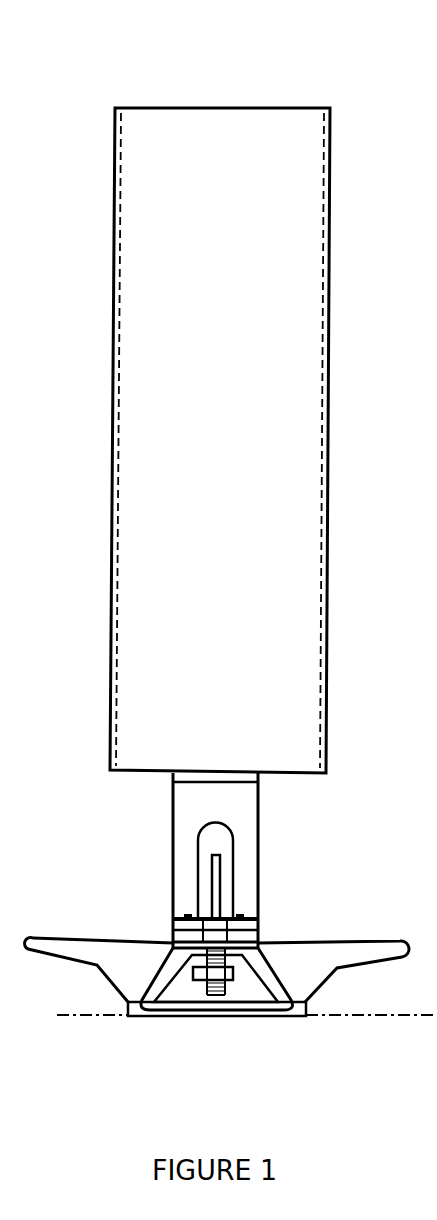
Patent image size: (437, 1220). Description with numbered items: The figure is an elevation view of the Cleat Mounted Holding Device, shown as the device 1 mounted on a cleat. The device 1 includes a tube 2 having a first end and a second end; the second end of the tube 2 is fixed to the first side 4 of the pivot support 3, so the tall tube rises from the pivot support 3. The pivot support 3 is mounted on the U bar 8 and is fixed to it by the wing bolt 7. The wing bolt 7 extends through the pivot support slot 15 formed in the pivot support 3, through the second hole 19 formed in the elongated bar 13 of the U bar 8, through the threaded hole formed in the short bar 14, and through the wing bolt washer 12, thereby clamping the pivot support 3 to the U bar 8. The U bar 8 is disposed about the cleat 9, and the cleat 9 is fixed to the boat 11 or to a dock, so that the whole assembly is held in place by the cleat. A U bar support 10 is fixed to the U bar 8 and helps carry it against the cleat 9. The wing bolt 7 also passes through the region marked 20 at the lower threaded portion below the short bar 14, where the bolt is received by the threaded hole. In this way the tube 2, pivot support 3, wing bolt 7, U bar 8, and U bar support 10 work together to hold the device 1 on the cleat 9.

The device 1 is at (206, 860).
The tube 2 is at (235, 15).
The pivot support 3 is at (258, 820).
The first side of the pivot support 4 is at (173, 778).
The wing bolt 7 is at (208, 882).
The U bar 8 is at (258, 938).
The cleat 9 is at (384, 940).
The U bar support 10 is at (288, 988).
The boat 11 is at (92, 1013).
The wing bolt washer 12 is at (203, 918).
The elongated bar 13 is at (175, 935).
The short bar 14 is at (196, 988).
The pivot support slot 15 is at (198, 840).
The second hole 19 is at (260, 926).
The threaded end 20 is at (233, 981).